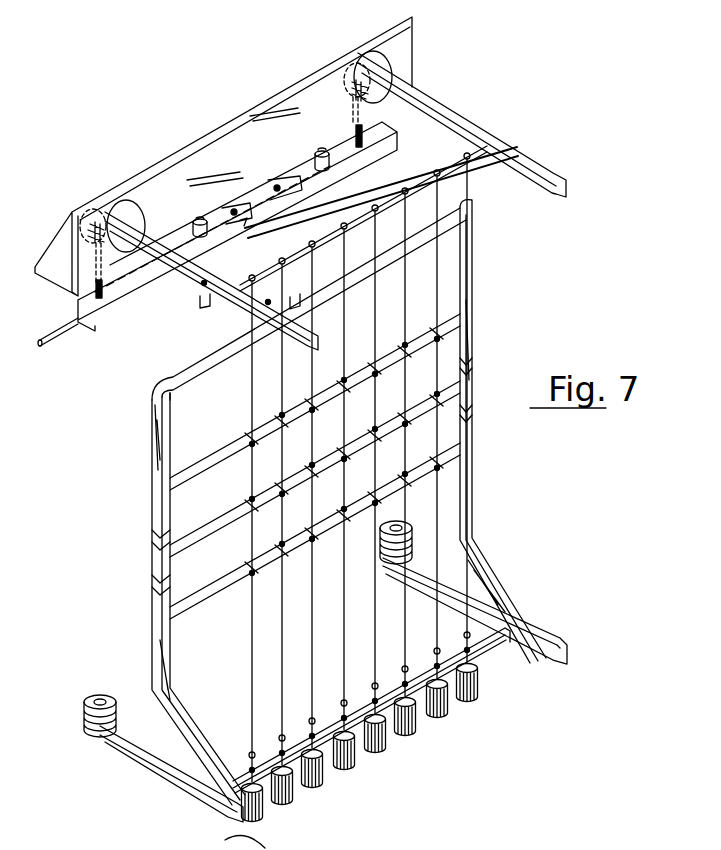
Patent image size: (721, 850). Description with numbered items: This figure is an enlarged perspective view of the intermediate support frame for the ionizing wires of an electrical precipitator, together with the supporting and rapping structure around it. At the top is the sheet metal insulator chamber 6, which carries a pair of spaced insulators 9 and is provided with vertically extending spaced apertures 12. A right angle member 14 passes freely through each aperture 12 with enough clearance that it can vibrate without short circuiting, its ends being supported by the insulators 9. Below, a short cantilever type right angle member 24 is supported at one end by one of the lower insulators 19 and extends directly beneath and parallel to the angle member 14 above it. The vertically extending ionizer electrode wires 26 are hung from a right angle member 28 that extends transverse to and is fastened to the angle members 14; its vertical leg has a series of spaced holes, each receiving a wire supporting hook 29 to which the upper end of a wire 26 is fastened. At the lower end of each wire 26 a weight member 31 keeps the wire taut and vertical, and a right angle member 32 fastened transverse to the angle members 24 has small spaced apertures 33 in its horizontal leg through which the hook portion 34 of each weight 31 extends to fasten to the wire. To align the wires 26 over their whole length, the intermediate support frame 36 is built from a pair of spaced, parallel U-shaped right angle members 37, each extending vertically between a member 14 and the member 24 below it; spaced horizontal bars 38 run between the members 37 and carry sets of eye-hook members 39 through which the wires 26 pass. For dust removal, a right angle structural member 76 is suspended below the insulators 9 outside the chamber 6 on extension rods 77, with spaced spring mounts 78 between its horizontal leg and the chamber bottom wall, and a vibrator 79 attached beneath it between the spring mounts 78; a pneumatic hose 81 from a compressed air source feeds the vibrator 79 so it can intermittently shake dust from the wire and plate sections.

The insulator chamber 6 is at (55, 236).
The insulators 9 is at (90, 210).
The apertures 12 is at (183, 196).
The right angle member 14 is at (468, 128).
The insulators 19 is at (86, 712).
The cantilever type right angle member 24 is at (155, 762).
The ionizer electrode wires 26 is at (372, 300).
The right angle member 28 is at (404, 165).
The wire supporting hook 29 is at (345, 236).
The weight member 31 is at (322, 770).
The right angle member 32 is at (327, 724).
The apertures 33 is at (378, 698).
The hook portion 34 is at (254, 752).
The intermediate support frame 36 is at (148, 474).
The U-shaped right angle members 37 is at (160, 620).
The horizontal bars 38 is at (197, 478).
The eye-hook members 39 is at (313, 425).
The right angle structural member 76 is at (118, 315).
The extension rods 77 is at (82, 306).
The spring mounts 78 is at (214, 226).
The vibrator 79 is at (295, 195).
The pneumatic hose 81 is at (46, 346).